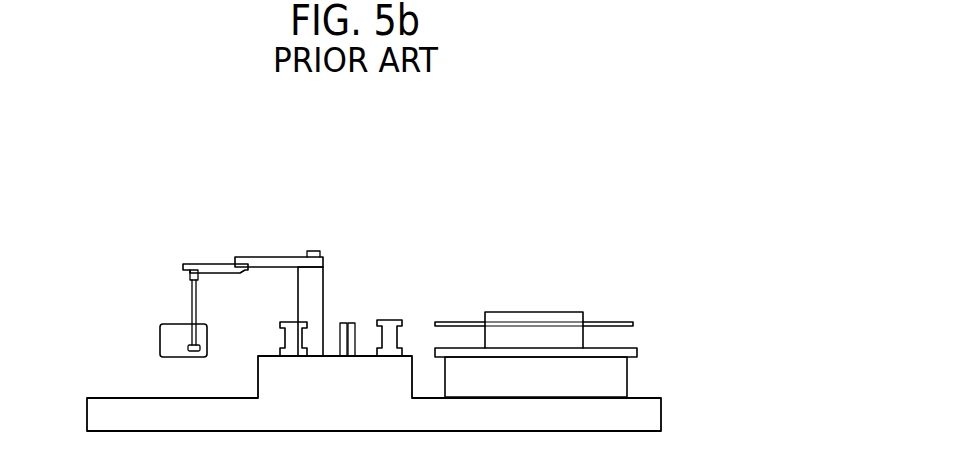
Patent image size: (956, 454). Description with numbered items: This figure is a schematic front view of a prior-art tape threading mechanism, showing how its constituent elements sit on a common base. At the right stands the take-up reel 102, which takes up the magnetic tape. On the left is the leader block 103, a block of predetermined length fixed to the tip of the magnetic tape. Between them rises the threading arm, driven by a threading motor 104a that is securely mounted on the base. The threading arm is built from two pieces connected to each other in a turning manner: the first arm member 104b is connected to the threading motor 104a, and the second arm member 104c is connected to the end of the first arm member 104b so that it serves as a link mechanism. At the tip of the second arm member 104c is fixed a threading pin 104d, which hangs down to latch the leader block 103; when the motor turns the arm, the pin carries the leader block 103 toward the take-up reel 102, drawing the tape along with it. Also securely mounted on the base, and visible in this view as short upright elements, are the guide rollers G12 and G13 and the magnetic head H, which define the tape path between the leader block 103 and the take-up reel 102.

The take-up reel 102 is at (620, 322).
The leader block 103 is at (160, 342).
The threading motor 104a is at (324, 284).
The first arm member 104b is at (282, 257).
The second arm member 104c is at (206, 264).
The threading pin 104d is at (189, 302).
The guide roller G12 is at (287, 322).
The guide roller G13 is at (395, 320).
The magnetic head H is at (348, 321).